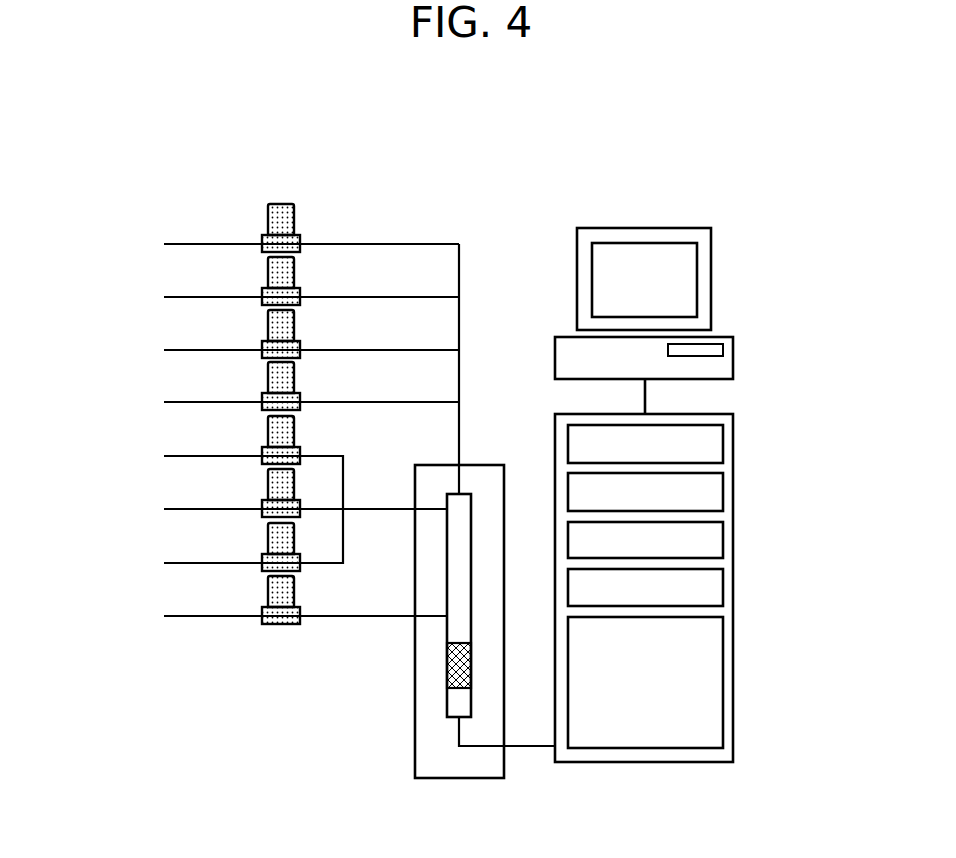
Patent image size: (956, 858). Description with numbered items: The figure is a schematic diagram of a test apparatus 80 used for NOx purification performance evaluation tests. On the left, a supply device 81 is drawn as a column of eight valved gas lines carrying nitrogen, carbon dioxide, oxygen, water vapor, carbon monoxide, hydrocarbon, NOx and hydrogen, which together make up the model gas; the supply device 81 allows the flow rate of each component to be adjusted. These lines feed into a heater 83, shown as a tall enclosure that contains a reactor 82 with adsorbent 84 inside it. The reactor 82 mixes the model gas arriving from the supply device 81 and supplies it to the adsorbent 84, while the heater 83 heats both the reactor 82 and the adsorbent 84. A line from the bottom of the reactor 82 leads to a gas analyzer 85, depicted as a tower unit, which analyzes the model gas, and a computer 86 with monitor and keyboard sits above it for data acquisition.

The test apparatus 80 is at (757, 138).
The supply device 81 is at (301, 157).
The reactor 82 is at (465, 490).
The heater 83 is at (475, 779).
The adsorbent 84 is at (447, 666).
The gas analyzer 85 is at (680, 763).
The computer 86 is at (667, 228).